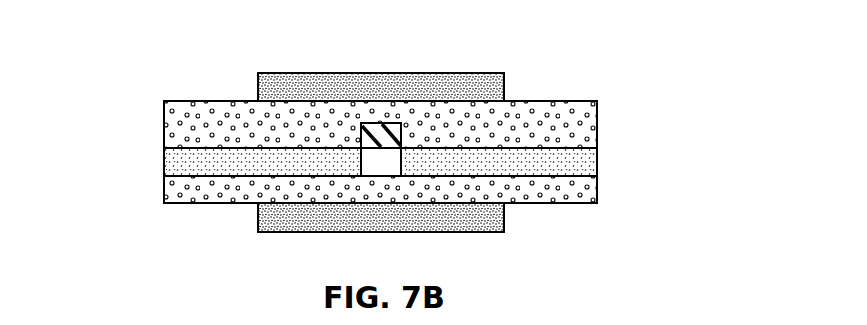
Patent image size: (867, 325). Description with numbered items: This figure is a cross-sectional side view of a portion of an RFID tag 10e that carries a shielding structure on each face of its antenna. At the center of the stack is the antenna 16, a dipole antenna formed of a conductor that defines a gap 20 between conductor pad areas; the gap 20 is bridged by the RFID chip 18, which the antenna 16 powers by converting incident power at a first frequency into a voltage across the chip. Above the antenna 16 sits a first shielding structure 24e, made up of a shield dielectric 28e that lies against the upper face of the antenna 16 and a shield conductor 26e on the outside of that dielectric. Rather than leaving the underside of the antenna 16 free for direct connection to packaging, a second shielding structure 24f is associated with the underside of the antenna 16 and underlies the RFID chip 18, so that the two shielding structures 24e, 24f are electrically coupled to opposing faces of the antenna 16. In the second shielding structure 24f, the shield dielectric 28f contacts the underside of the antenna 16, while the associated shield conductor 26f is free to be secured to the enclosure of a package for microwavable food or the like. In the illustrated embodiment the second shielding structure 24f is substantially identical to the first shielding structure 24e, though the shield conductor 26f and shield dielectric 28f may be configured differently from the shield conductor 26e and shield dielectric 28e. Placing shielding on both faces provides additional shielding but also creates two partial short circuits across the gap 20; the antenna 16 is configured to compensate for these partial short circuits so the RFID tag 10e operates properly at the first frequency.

The RFID tag 10e is at (558, 37).
The antenna 16 is at (578, 162).
The RFID chip 18 is at (382, 123).
The gap 20 is at (381, 160).
The first shielding structure 24e is at (608, 101).
The second shielding structure 24f is at (152, 200).
The shield conductor 26e is at (258, 87).
The shield conductor 26f is at (463, 232).
The shield dielectric 28e is at (178, 124).
The shield dielectric 28f is at (578, 188).